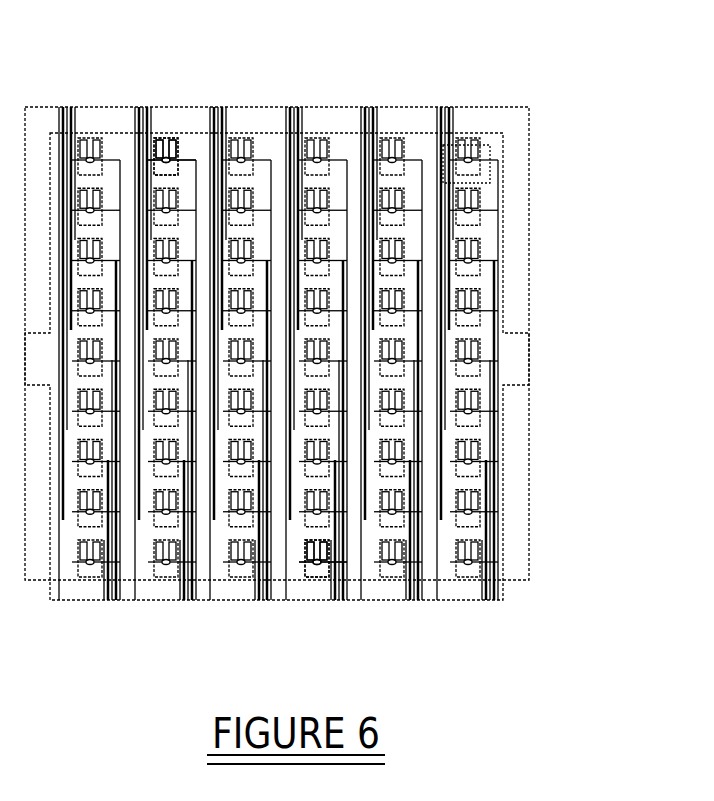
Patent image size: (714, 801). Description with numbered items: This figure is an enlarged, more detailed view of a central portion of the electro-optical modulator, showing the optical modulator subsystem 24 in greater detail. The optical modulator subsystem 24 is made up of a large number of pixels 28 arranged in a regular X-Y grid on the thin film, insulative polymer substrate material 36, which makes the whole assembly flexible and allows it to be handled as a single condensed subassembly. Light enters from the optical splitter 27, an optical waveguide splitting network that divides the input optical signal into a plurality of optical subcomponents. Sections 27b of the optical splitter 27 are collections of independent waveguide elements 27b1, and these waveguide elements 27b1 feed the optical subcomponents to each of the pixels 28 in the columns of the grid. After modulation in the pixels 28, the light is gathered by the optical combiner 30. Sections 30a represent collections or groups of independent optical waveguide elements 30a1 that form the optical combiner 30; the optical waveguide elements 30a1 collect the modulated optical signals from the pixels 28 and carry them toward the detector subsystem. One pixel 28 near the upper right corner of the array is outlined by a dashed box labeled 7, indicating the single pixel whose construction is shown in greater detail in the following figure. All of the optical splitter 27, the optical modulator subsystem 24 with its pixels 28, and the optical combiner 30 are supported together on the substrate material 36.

The optical modulator subsystem 24 is at (292, 78).
The substrate material 36 is at (440, 590).
The sections of the optical combiner 30a is at (62, 97).
The optical waveguide elements 30a1 is at (145, 106).
The sections of the optical splitter 27b is at (260, 615).
The waveguide elements 27b1 is at (412, 614).
The pixel 28 is at (168, 140).
The detail region of unit cell 7 is at (490, 156).
The optical combiner 30 is at (527, 69).
The optical splitter 27 is at (140, 645).